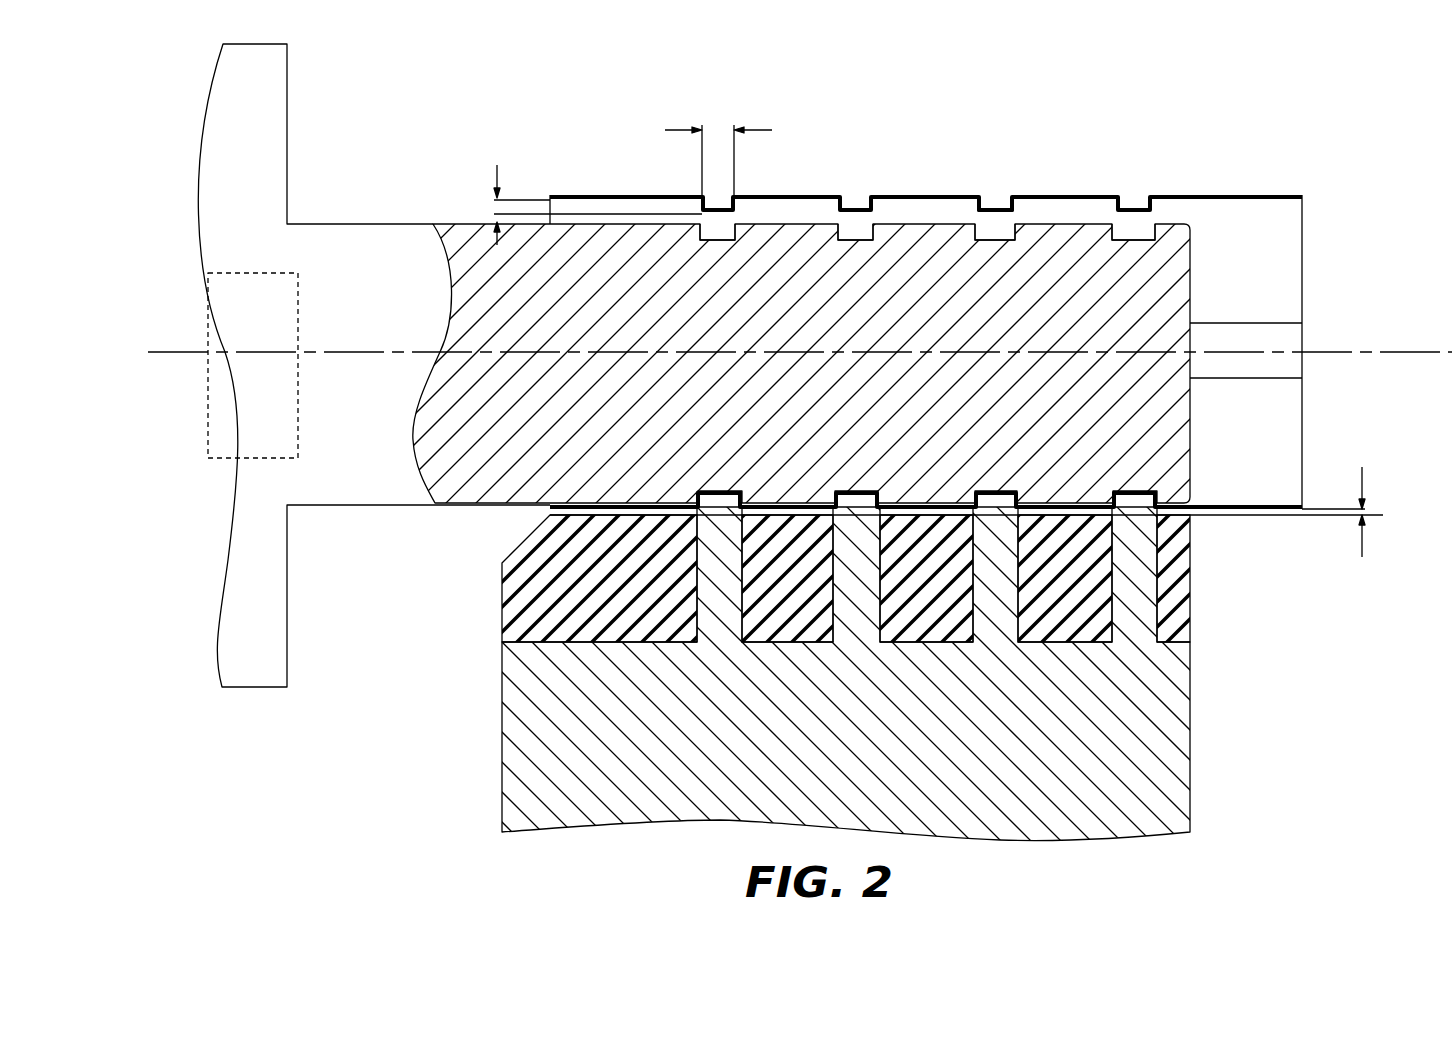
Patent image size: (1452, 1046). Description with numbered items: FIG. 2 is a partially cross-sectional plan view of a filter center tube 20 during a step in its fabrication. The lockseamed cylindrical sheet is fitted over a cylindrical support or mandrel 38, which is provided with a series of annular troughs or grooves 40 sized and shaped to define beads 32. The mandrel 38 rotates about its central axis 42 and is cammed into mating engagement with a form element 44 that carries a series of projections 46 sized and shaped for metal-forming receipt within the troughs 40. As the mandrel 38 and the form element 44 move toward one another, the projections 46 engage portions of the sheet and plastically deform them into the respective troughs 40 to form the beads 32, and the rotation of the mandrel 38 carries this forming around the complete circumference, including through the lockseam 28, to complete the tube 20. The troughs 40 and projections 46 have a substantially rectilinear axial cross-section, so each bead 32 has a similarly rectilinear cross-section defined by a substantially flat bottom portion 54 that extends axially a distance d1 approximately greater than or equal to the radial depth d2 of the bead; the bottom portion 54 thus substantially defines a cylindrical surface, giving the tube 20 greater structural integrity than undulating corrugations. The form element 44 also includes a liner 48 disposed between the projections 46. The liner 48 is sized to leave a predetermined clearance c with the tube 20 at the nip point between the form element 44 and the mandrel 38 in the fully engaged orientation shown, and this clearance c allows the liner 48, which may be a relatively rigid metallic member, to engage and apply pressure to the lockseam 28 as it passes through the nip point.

The tube 20 is at (1262, 195).
The lockseam 28 is at (1262, 328).
The beads 32 is at (842, 197).
The mandrel 38 is at (345, 245).
The troughs 40 is at (730, 226).
The central axis 42 is at (1424, 352).
The form element 44 is at (485, 686).
The projections 46 is at (716, 505).
The liner 48 is at (545, 588).
The bottom portion 54 is at (995, 210).
The clearance c is at (1367, 512).
The axial distance d1 is at (715, 130).
The radial depth d2 is at (494, 206).